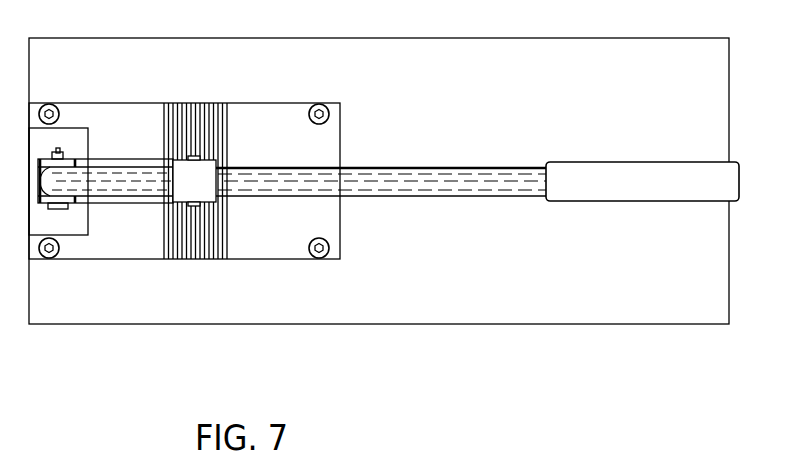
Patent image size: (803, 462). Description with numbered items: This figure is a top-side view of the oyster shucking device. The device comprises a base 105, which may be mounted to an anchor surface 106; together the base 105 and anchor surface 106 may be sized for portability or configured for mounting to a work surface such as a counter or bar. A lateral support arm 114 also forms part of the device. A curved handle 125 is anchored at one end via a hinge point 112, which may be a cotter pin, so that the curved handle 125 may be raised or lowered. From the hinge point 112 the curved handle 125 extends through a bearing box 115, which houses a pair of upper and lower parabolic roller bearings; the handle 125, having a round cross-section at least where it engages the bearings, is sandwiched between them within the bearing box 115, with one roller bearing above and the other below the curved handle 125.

The base 105 is at (249, 252).
The anchor surface 106 is at (393, 314).
The hinge point 112 is at (62, 209).
The lateral support arm 114 is at (110, 163).
The bearing box 115 is at (205, 173).
The curved handle 125 is at (407, 168).